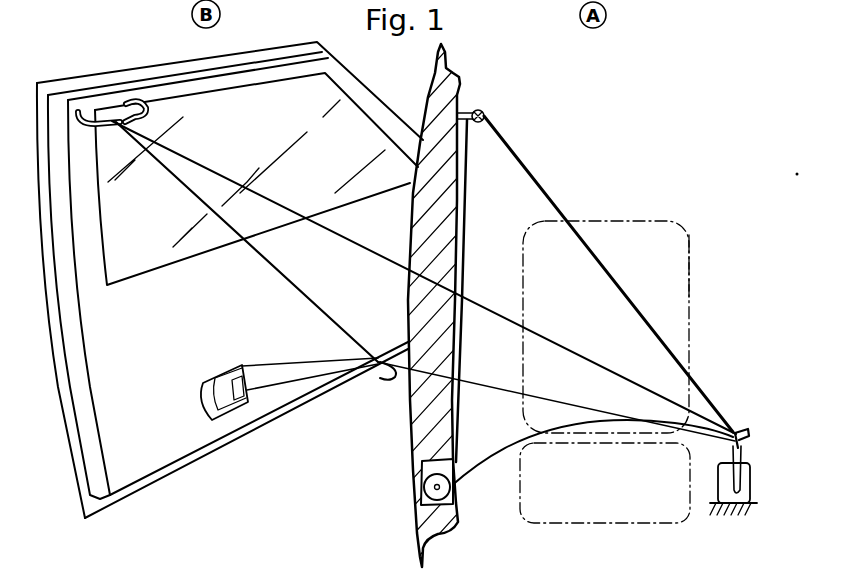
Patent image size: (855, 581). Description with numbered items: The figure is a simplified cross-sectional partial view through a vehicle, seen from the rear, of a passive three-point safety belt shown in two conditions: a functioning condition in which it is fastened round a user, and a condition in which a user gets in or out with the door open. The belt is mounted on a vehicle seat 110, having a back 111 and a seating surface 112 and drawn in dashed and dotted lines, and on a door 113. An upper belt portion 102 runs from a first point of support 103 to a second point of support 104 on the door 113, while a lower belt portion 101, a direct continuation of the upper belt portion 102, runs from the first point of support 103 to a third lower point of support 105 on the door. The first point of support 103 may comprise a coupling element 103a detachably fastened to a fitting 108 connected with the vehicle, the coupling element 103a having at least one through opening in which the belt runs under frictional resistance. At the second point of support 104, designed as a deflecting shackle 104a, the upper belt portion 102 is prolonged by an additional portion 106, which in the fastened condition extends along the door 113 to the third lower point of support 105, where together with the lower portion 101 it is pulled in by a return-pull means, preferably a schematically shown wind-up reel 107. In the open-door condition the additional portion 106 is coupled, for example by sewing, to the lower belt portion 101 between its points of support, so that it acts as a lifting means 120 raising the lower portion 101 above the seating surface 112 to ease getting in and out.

The lower belt portion 101 is at (347, 373).
The upper belt portion 102 is at (555, 186).
The first point of support 103 is at (729, 400).
The coupling element 103a is at (742, 442).
The second point of support 104 is at (134, 98).
The deflecting shackle 104a is at (100, 117).
The third lower point of support 105 is at (237, 408).
The additional portion 106 is at (470, 190).
The wind-up reel 107 is at (433, 492).
The fitting 108 is at (748, 493).
The vehicle seat 110 is at (640, 216).
The back 111 is at (692, 242).
The seating surface 112 is at (597, 513).
The door 113 is at (418, 431).
The lifting means 120 is at (250, 258).